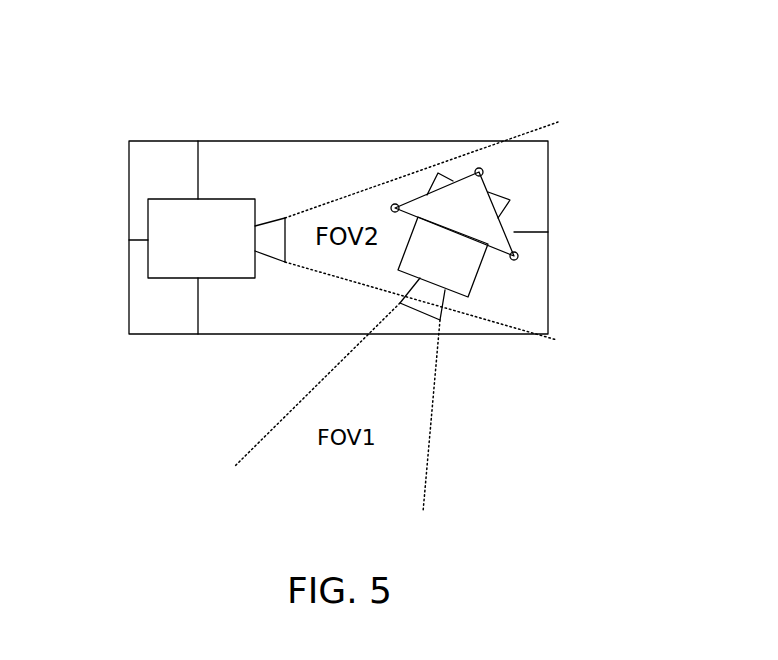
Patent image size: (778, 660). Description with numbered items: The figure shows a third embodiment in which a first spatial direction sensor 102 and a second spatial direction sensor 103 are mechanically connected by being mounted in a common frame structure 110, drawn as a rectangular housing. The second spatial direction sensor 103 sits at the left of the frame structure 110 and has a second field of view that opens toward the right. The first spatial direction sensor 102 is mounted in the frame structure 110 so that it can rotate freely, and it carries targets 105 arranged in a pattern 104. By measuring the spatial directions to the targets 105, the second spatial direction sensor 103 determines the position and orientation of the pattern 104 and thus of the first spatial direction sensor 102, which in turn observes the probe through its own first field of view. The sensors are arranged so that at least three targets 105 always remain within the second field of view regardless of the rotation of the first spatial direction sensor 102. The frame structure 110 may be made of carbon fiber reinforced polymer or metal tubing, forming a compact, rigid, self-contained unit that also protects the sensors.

The frame structure 110 is at (158, 140).
The second spatial direction sensor 103 is at (155, 226).
The targets 105 is at (513, 252).
The pattern 104 is at (473, 228).
The first spatial direction sensor 102 is at (452, 277).